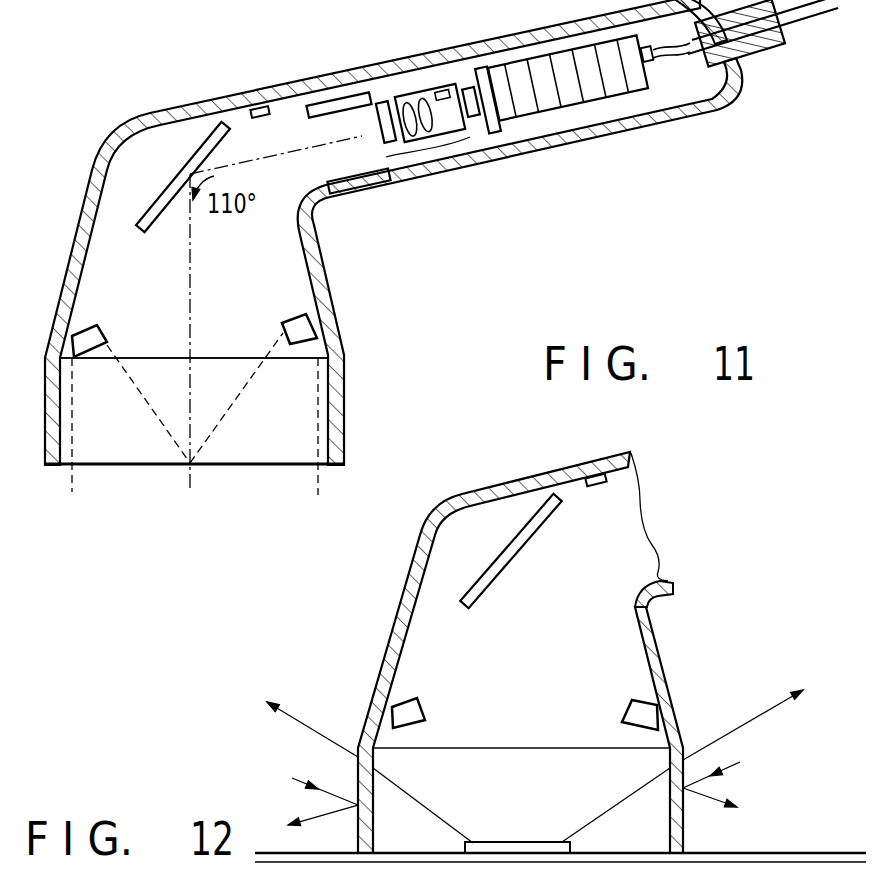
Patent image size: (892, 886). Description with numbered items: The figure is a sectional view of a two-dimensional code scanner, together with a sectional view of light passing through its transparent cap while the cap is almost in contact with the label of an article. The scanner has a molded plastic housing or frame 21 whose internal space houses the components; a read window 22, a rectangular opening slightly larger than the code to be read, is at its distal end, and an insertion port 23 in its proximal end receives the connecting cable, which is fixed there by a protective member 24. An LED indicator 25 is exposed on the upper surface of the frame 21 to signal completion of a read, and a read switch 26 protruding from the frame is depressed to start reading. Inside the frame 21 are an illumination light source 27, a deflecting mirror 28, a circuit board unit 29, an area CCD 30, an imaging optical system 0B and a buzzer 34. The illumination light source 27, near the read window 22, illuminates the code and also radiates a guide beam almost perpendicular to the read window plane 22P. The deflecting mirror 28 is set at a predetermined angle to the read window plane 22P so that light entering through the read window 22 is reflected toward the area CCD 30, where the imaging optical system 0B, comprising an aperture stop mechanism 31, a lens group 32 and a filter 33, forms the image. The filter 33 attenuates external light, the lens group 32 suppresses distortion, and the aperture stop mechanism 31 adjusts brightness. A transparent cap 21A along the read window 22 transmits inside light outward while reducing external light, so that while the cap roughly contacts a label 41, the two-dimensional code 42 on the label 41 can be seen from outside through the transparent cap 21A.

In FIG. 11, the housing or frame 21 is at (334, 323).
In FIG. 12, the housing or frame 21 is at (665, 660).
In FIG. 11, the transparent cap 21A is at (345, 393).
In FIG. 12, the transparent cap 21A is at (686, 810).
In FIG. 11, the read window 22 is at (250, 380).
In FIG. 11, the read window plane 22P is at (305, 357).
In FIG. 11, the insertion port 23 is at (812, 27).
In FIG. 11, the protective member 24 is at (772, 58).
In FIG. 11, the LED indicator 25 is at (262, 106).
In FIG. 12, the LED indicator 25 is at (598, 488).
In FIG. 11, the read switch 26 is at (322, 94).
In FIG. 11, the illumination light source 27 is at (106, 333).
In FIG. 12, the illumination light source 27 is at (426, 710).
In FIG. 11, the deflecting mirror 28 is at (170, 190).
In FIG. 12, the deflecting mirror 28 is at (485, 577).
In FIG. 11, the circuit board unit 29 is at (628, 90).
In FIG. 11, the area CCD 30 is at (494, 122).
In FIG. 11, the aperture stop mechanism 31 is at (476, 118).
In FIG. 11, the lens group 32 is at (413, 97).
In FIG. 11, the filter 33 is at (386, 103).
In FIG. 11, the buzzer 34 is at (361, 188).
In FIG. 11, the imaging optical system 0B is at (438, 155).
In FIG. 12, the label 41 is at (282, 852).
In FIG. 12, the 2-dimensional code 42 is at (513, 842).